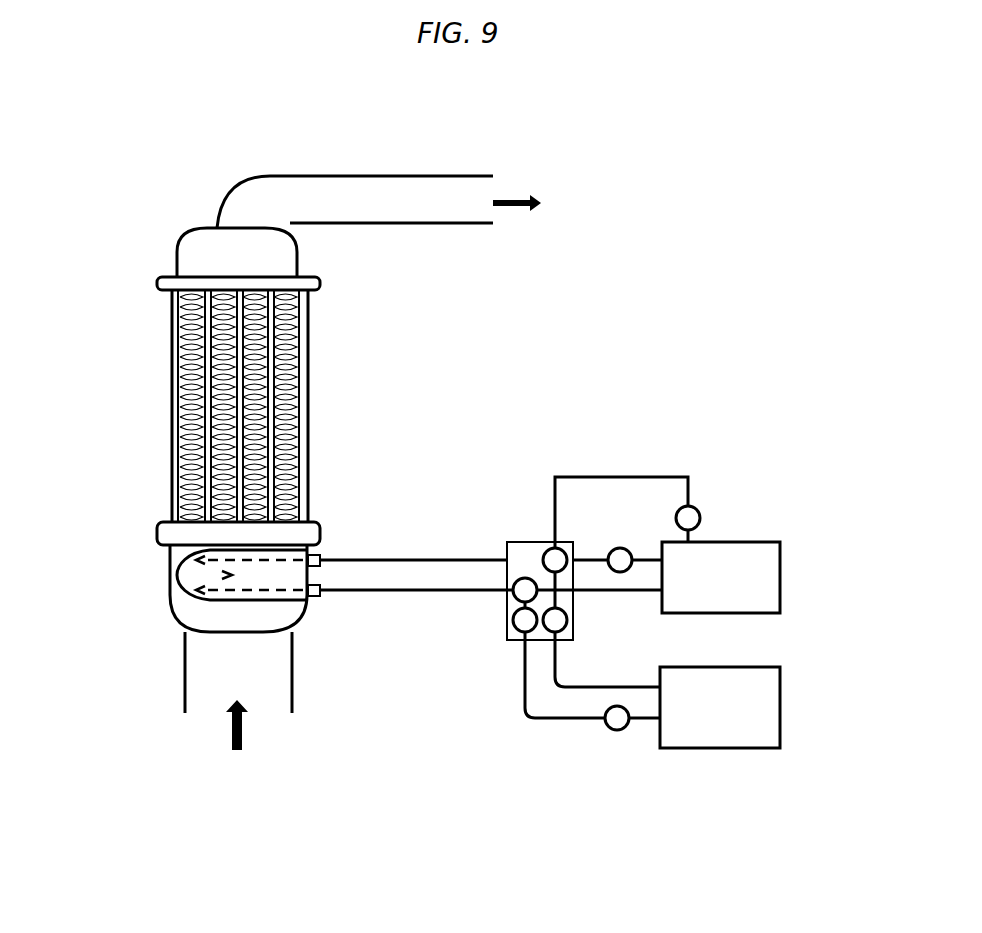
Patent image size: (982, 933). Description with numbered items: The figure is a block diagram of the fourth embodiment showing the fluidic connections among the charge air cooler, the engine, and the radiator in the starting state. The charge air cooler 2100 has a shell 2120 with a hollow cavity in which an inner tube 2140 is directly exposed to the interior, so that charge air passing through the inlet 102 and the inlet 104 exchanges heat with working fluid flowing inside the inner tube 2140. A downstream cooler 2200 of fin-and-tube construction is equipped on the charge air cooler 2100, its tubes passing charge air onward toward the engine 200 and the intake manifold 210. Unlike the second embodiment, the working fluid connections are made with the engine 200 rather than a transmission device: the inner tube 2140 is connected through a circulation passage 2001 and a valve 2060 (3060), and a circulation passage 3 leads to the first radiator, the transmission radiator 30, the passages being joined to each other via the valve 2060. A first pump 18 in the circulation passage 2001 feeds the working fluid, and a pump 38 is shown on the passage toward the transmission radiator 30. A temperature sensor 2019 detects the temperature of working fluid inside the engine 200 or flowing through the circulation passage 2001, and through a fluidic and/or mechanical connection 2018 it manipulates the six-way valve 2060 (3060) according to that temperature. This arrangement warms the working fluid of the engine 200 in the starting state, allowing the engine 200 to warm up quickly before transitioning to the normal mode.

The inlet 104 is at (330, 228).
The intake manifold 210 is at (469, 240).
The downstream cooler 2200 is at (160, 386).
The charge air cooler 2100 is at (157, 513).
The shell 2120 is at (167, 553).
The inner tube 2140 is at (290, 558).
The inlet 102 is at (184, 691).
The circulation passage 2001 is at (480, 540).
The valve 2060 is at (610, 476).
The valve 3060 is at (621, 490).
The fluidic and/or mechanical connection 2018 is at (662, 475).
The temperature sensor 2019 is at (699, 507).
The first pump 18 is at (620, 546).
The engine 200 is at (783, 578).
The circulation passage 3 is at (532, 729).
The pressure sensor 38 is at (620, 705).
The first radiator (transmission radiator) 30 is at (783, 717).